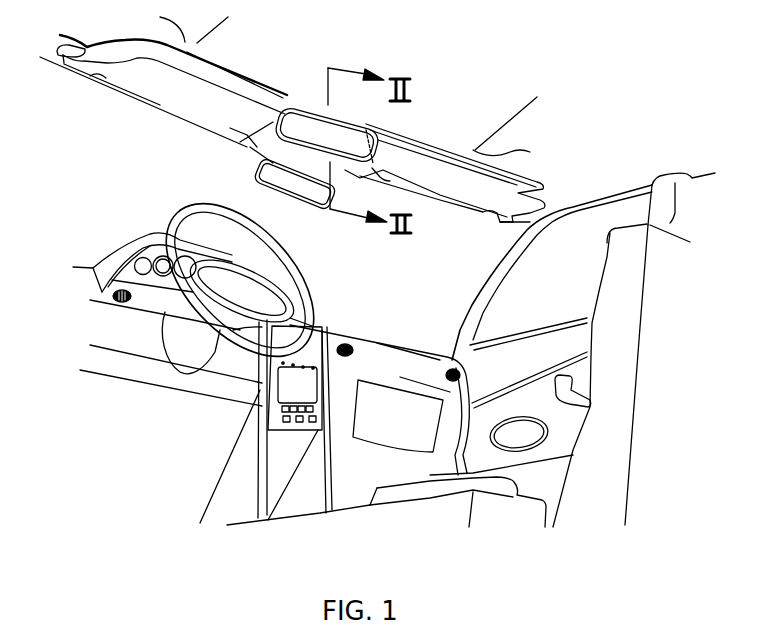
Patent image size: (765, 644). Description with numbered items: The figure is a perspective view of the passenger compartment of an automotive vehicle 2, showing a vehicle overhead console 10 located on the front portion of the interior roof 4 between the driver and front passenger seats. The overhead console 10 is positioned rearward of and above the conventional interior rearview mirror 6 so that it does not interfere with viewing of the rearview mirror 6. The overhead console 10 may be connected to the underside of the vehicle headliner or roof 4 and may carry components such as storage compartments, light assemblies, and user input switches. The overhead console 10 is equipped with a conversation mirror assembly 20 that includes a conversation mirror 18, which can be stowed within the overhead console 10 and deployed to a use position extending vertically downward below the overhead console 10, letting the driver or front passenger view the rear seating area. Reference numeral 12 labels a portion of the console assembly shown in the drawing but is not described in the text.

The automotive vehicle 2 is at (128, 160).
The interior roof 4 is at (485, 107).
The interior rearview mirror 6 is at (298, 190).
The vehicle overhead console 10 is at (292, 138).
The visor body 12 is at (257, 142).
The conversation mirror 18 is at (294, 121).
The conversation mirror assembly 20 is at (309, 104).